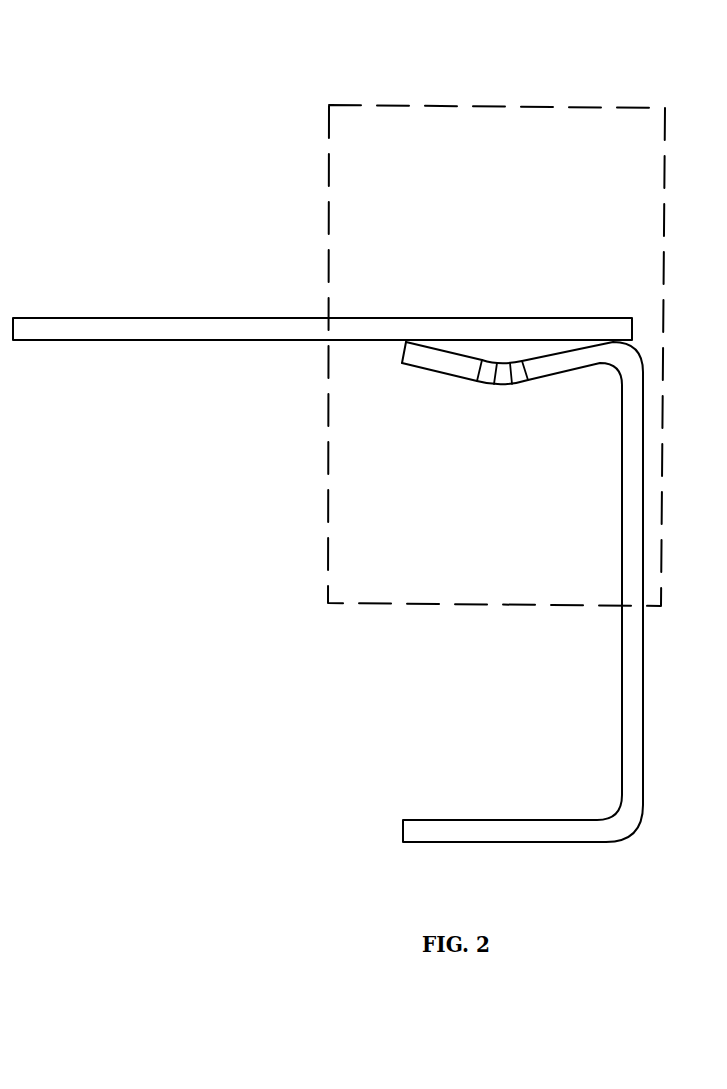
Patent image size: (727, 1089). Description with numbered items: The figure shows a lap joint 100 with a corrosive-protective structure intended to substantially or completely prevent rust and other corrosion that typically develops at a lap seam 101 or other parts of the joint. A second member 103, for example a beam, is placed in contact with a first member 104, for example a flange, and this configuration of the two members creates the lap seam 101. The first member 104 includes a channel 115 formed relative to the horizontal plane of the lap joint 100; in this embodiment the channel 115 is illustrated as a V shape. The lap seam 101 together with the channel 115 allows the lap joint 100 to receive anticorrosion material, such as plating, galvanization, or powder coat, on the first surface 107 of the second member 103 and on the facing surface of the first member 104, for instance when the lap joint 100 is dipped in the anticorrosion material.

The lap joint 100 is at (512, 99).
The lap seam 101 is at (489, 354).
The second member 103 is at (53, 316).
The first member 104 is at (400, 360).
The first surface 107 is at (430, 347).
The channel 115 is at (537, 354).